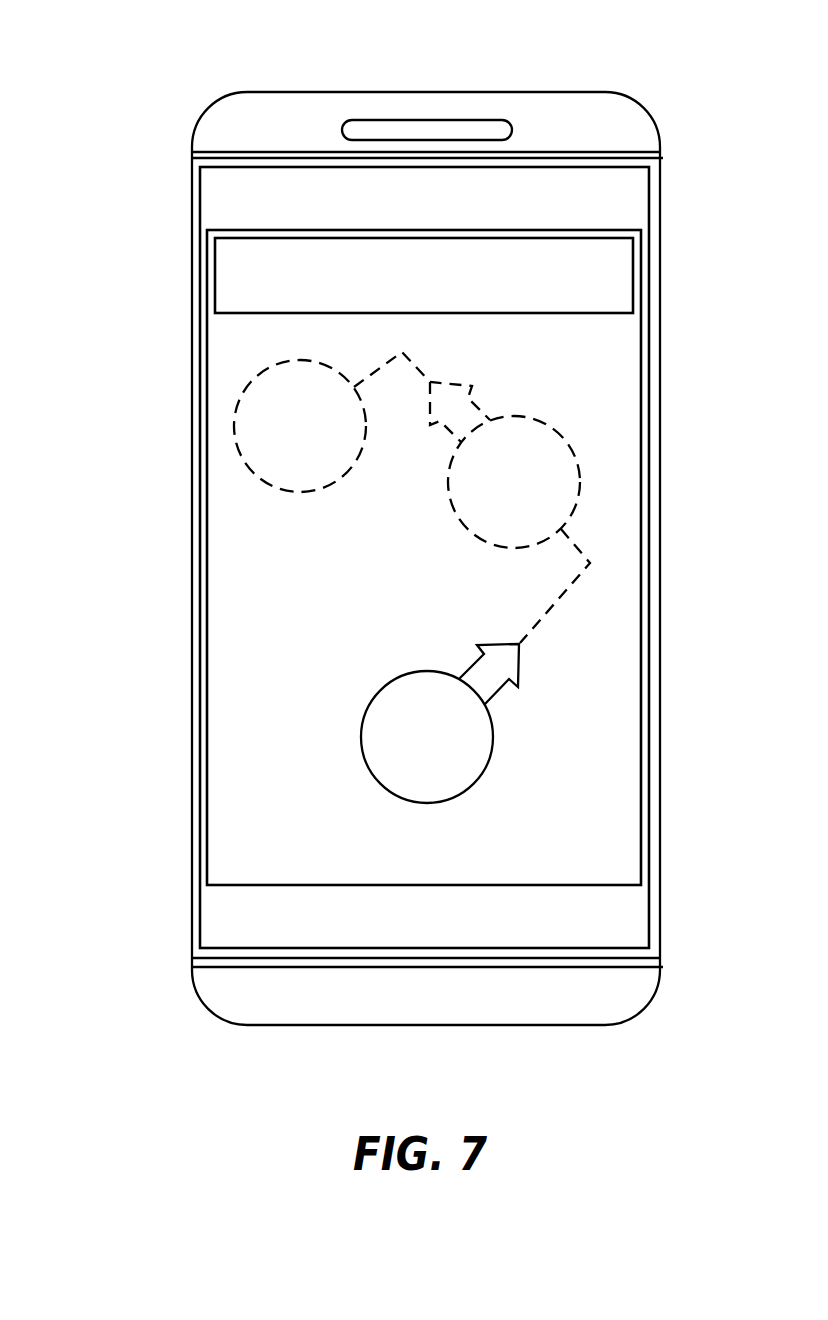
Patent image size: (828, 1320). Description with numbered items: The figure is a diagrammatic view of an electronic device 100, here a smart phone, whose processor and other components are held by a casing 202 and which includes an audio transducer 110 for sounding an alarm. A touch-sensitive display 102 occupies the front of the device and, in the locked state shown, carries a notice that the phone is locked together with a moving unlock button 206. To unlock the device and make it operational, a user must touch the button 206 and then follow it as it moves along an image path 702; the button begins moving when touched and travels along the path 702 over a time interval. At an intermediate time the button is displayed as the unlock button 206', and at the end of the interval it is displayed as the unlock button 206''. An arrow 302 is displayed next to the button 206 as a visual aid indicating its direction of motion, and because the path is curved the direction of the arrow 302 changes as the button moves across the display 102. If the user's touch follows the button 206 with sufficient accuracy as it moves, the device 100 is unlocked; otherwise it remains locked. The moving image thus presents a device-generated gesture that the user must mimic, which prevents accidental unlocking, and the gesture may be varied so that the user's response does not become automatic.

The electronic device 100 is at (399, 1078).
The touch-sensitive display 102 is at (235, 657).
The audio transducer 110 is at (380, 128).
The casing 202 is at (199, 411).
The unlock button 206 is at (383, 737).
The unlock button at intermediate time 206' is at (471, 482).
The unlock button at end of interval 206'' is at (297, 456).
The arrow 302 is at (471, 665).
The image path 702 is at (549, 610).